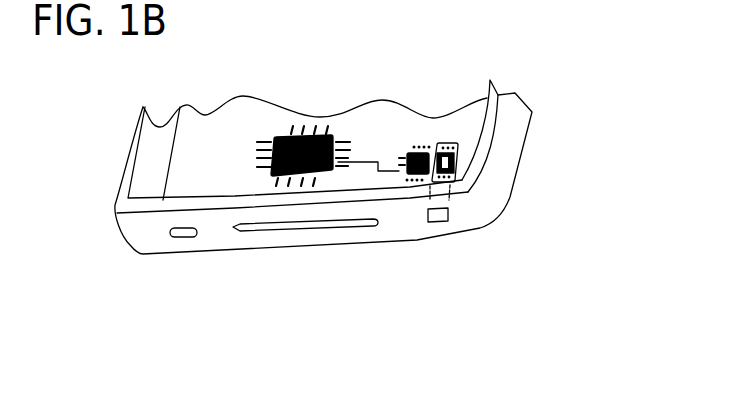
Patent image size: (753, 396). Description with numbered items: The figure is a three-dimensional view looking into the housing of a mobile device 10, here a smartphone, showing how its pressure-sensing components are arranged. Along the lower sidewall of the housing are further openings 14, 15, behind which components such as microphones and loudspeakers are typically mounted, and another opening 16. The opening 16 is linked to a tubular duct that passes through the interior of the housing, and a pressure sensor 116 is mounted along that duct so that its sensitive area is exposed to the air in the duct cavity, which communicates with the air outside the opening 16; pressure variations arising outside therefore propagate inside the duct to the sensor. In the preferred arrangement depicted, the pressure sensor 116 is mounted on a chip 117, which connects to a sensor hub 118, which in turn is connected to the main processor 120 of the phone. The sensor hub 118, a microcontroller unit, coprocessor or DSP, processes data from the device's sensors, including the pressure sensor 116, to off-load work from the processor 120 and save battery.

The mobile device 10 is at (549, 236).
The opening 14 is at (163, 232).
The opening 15 is at (338, 230).
The opening 16 is at (426, 222).
The pressure sensor 116 is at (456, 170).
The chip 117 is at (459, 149).
The sensor hub 118 is at (402, 157).
The main processor 120 is at (257, 143).